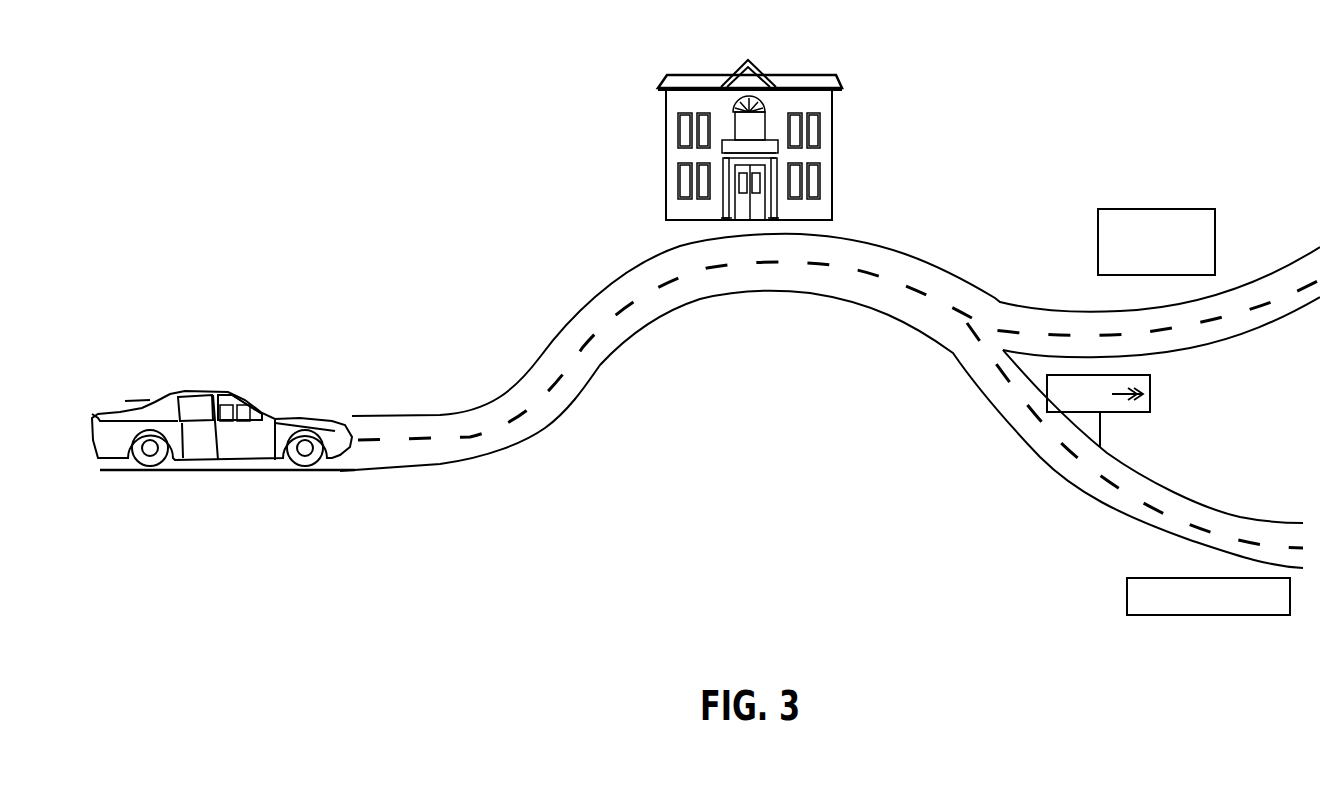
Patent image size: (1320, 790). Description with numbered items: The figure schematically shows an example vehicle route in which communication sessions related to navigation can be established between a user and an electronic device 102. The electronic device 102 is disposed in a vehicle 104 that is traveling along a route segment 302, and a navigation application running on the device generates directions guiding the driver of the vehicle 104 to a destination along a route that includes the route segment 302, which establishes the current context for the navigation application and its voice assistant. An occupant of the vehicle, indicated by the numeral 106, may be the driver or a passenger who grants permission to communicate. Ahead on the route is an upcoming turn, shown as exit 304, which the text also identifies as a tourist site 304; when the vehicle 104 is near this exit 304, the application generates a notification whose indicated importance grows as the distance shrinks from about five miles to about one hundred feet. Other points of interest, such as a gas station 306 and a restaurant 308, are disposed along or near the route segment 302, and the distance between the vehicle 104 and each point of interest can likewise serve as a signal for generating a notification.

The electronic device 102 is at (223, 404).
The vehicle 104 is at (193, 391).
The user 106 is at (258, 409).
The route segment 302 is at (516, 448).
The exit 304 is at (800, 73).
The gas station 306 is at (1193, 208).
The restaurant 308 is at (1197, 616).